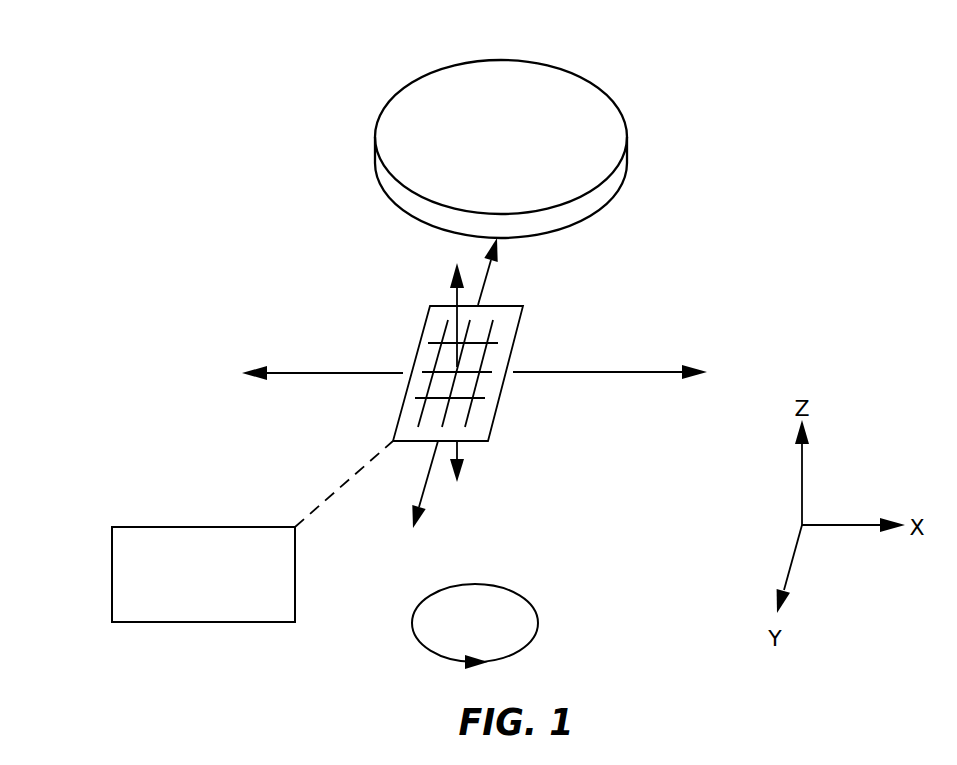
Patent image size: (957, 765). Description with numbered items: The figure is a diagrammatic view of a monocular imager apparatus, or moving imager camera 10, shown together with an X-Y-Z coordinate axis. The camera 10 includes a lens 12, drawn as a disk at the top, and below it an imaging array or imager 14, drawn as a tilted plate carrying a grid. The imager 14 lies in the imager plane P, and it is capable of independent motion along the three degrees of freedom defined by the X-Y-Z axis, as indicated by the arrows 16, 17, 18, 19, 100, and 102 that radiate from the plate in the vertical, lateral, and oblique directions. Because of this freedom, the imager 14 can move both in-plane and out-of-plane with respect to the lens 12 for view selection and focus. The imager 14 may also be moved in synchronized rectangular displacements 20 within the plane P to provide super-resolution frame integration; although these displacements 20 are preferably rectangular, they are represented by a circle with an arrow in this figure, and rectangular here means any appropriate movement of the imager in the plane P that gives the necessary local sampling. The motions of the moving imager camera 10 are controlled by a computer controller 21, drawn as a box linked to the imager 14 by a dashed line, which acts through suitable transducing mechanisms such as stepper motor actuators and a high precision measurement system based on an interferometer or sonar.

The moving imager camera 10 is at (757, 108).
The lens 12 is at (628, 152).
The imager 14 is at (482, 417).
The imager plane P is at (523, 320).
The arrow 16 is at (485, 268).
The arrow 18 is at (428, 489).
The arrow 17 is at (621, 371).
The arrow 19 is at (312, 372).
The arrow 100 is at (460, 447).
The arrow 102 is at (453, 291).
The rectangular displacements 20 is at (538, 619).
The computer controller 21 is at (296, 574).